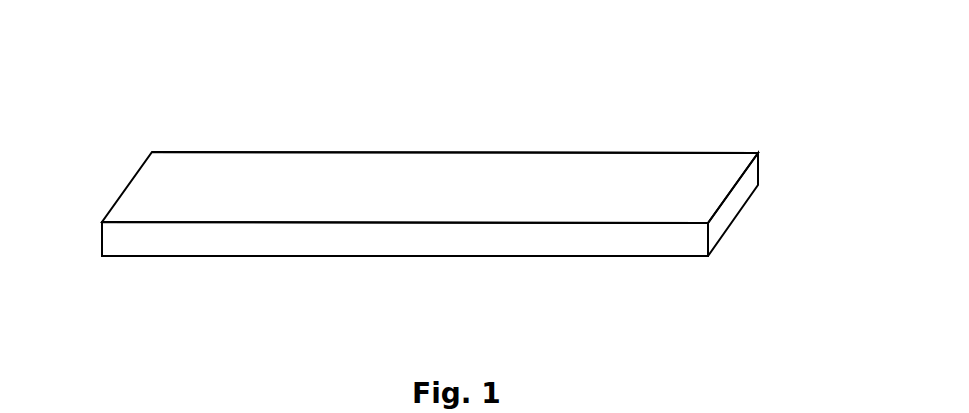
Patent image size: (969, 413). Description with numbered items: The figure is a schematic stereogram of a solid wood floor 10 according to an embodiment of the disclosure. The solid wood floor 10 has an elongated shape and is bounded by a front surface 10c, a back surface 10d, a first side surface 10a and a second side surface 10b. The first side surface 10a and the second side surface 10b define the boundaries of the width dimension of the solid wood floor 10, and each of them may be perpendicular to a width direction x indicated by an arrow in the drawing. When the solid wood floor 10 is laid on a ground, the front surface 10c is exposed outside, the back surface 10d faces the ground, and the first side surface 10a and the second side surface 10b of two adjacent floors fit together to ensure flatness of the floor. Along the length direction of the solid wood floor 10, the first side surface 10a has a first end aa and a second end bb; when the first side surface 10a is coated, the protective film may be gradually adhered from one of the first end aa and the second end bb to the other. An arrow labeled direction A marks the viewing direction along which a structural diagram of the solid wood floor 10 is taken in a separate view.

The solid wood floor 10 is at (407, 188).
The first side surface 10a is at (447, 238).
The second side surface 10b is at (530, 150).
The front surface 10c is at (218, 175).
The back surface 10d is at (233, 256).
The first end aa is at (100, 241).
The second end bb is at (710, 237).
The direction A is at (870, 153).
The width direction x is at (618, 273).